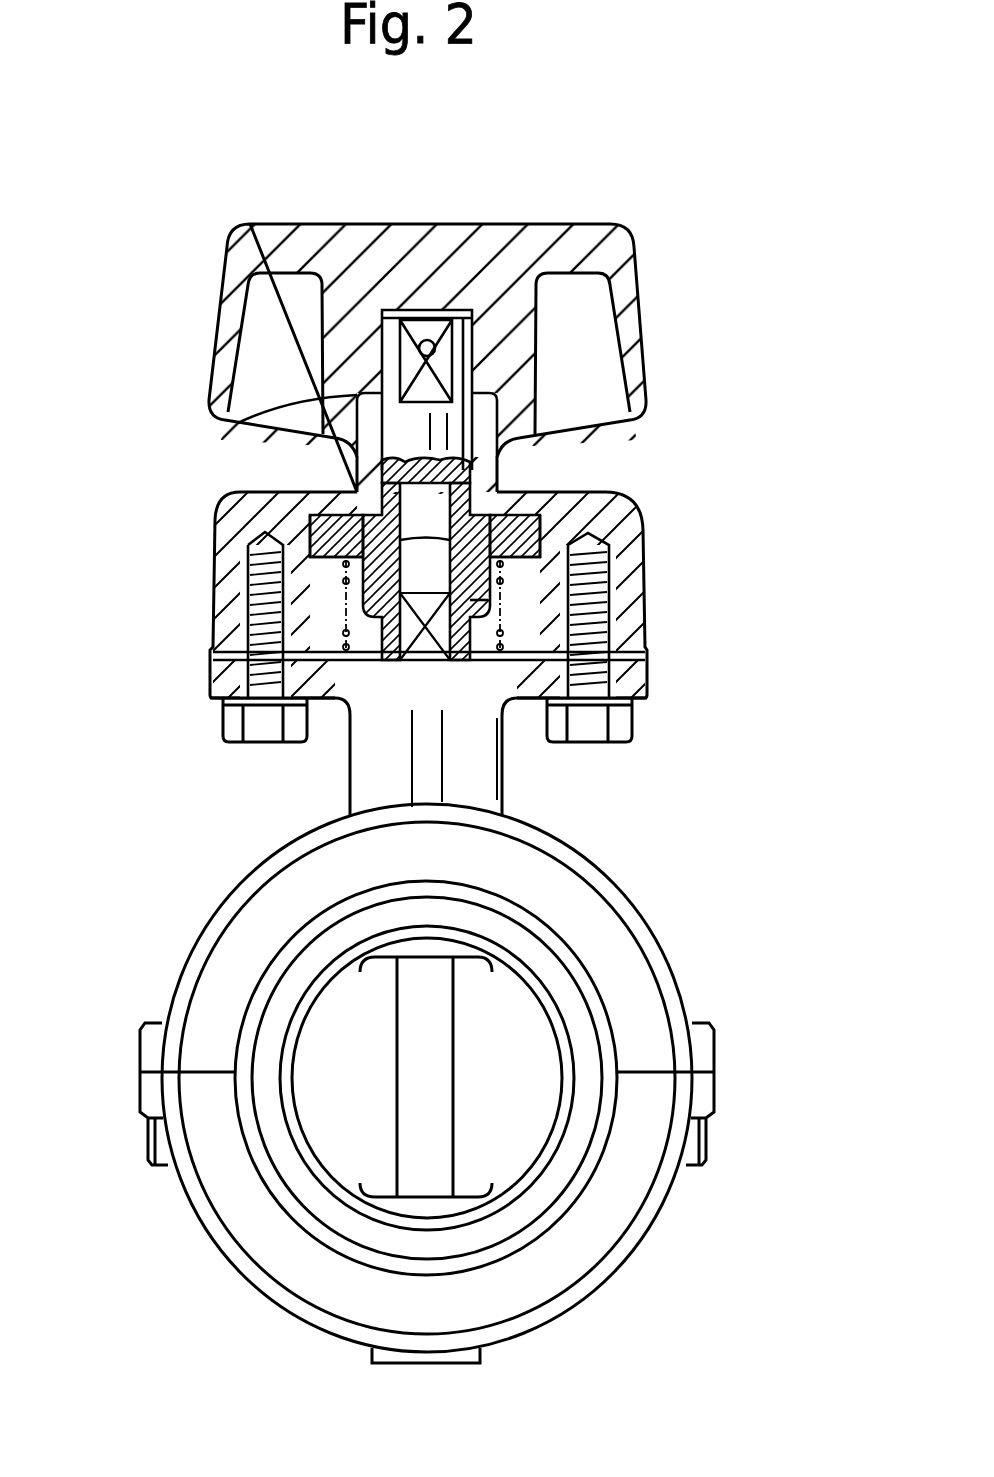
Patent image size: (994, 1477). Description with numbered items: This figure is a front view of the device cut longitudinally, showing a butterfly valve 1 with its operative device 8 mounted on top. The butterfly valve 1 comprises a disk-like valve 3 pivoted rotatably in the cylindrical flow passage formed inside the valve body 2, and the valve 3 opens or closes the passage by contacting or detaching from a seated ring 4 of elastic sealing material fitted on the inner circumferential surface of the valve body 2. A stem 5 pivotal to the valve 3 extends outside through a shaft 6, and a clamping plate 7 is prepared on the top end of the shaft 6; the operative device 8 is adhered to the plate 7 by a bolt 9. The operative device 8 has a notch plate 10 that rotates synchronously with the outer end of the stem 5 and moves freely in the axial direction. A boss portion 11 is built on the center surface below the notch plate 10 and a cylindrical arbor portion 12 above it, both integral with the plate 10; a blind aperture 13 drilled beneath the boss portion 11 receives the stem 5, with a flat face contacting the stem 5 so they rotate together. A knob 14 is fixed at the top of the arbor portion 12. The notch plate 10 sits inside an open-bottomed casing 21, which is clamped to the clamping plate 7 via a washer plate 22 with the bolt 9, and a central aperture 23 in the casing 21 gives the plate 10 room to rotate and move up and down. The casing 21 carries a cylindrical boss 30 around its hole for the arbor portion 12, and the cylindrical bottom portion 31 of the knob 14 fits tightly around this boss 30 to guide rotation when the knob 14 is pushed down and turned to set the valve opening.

The butterfly valve 1 is at (640, 915).
The valve body 2 is at (677, 977).
The disk-like valve 3 is at (497, 1158).
The seated ring 4 is at (573, 1148).
The stem 5 is at (233, 698).
The shaft 6 is at (487, 785).
The clamping plate 7 is at (627, 685).
The operative device 8 is at (640, 500).
The bolt 9 is at (245, 632).
The notch plate 10 is at (360, 490).
The boss portion 11 is at (452, 596).
The cylindrical arbor portion 12 is at (440, 428).
The blind aperture 13 is at (433, 542).
The knob 14 is at (457, 237).
The casing 21 is at (618, 538).
The washer plate 22 is at (633, 660).
The central aperture 23 is at (325, 582).
The cylindrical boss 30 is at (356, 490).
The cylindrical bottom portion 31 is at (238, 423).